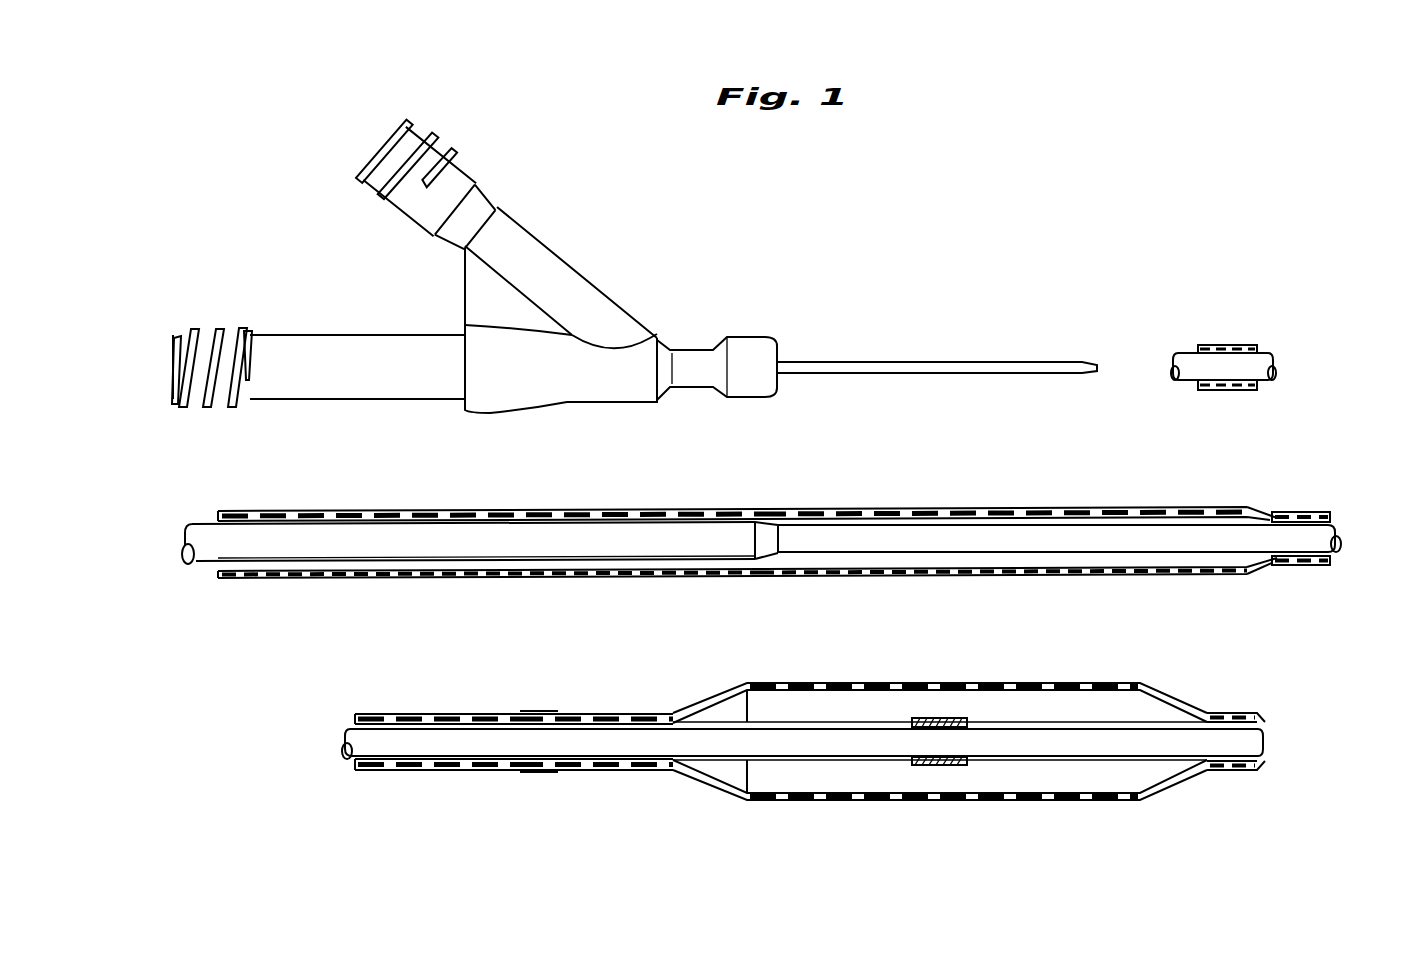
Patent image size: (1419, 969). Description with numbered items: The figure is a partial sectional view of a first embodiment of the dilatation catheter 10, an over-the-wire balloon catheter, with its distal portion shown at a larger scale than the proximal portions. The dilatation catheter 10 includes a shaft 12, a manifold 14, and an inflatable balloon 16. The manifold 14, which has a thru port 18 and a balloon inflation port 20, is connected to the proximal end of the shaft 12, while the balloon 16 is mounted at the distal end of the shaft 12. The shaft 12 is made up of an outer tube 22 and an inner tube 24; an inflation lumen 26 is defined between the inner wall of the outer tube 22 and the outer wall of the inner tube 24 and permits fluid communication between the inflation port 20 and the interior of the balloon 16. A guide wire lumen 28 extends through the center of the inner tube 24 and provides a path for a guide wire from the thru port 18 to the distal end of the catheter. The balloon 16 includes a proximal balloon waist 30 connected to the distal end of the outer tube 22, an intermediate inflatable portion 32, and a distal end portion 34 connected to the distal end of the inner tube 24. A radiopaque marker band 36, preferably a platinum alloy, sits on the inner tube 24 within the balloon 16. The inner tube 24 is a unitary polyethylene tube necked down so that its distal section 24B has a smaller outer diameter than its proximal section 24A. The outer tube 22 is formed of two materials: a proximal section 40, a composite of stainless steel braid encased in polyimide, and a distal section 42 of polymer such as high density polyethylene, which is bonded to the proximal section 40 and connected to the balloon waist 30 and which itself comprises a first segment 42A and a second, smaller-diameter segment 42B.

The dilatation catheter 10 is at (1097, 218).
The shaft 12 is at (990, 352).
The manifold 14 is at (548, 207).
The inflatable balloon 16 is at (860, 814).
The thru port 18 is at (177, 363).
The balloon inflation port 20 is at (388, 142).
The outer tube 22 is at (1228, 340).
The inner tube 24 is at (1190, 386).
The proximal section 24A is at (1262, 363).
The distal section 24B is at (1016, 540).
The inflation lumen 26 is at (1228, 388).
The guide wire lumen 28 is at (1173, 371).
The proximal balloon waist 30 is at (630, 771).
The intermediate inflatable portion 32 is at (1005, 800).
The distal end portion 34 is at (1222, 766).
The marker band 36 is at (930, 718).
The proximal section 40 is at (1208, 342).
The distal section 42 is at (1084, 500).
The first segment 42A is at (850, 573).
The second segment 42B is at (1303, 570).